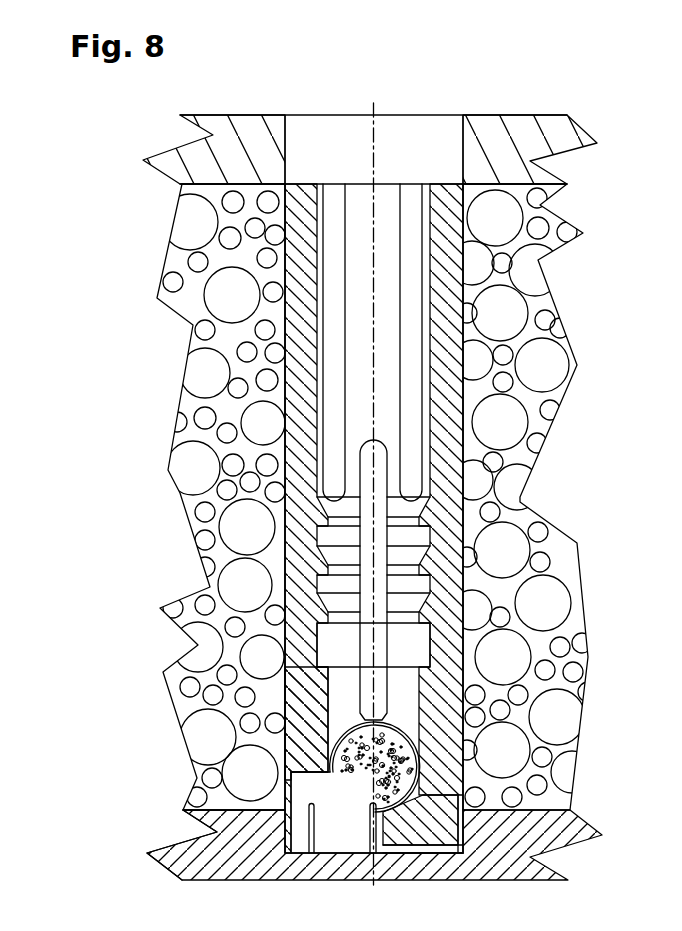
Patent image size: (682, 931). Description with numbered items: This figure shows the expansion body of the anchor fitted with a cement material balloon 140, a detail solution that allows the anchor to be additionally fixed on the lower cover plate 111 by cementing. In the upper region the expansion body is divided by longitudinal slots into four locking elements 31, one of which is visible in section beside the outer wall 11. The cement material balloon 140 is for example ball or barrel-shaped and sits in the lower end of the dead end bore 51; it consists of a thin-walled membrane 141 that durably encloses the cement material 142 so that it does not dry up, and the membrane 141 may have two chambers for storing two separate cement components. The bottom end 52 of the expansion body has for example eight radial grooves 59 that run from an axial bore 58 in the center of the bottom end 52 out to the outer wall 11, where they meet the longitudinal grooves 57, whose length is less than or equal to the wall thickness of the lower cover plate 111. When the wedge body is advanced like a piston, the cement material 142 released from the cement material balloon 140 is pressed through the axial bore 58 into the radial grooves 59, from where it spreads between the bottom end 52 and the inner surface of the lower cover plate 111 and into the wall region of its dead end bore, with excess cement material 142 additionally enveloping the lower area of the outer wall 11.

The outer wall 11 is at (285, 285).
The locking element 31 is at (299, 328).
The cement material balloon 140 is at (310, 758).
The membrane 141 is at (340, 740).
The cement material 142 is at (353, 750).
The dead end bore 51 is at (423, 794).
The axial bore 58 is at (380, 828).
The longitudinal groove 57 is at (458, 840).
The bottom end 52 is at (218, 866).
The lower cover plate 111 is at (223, 847).
The radial groove 59 is at (183, 810).